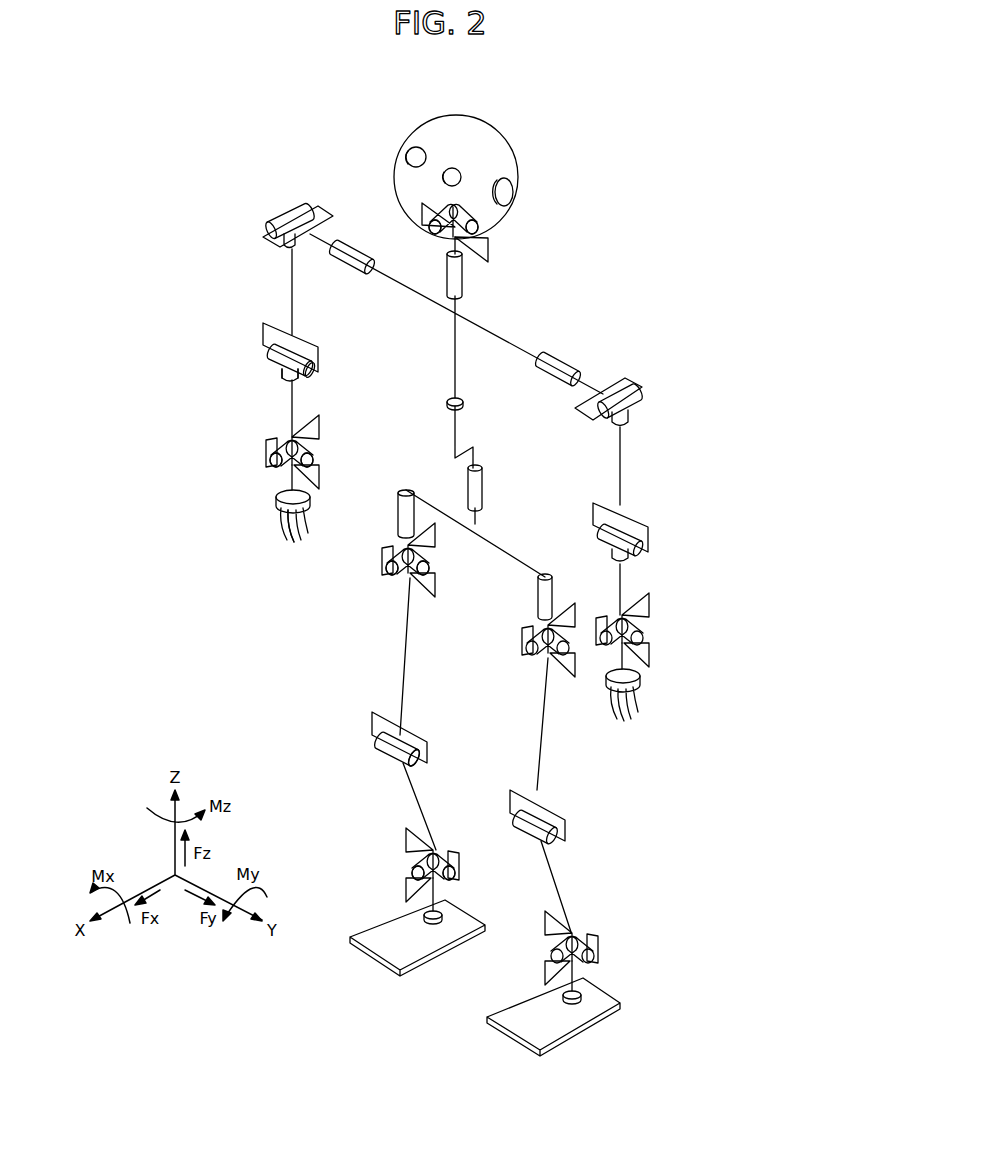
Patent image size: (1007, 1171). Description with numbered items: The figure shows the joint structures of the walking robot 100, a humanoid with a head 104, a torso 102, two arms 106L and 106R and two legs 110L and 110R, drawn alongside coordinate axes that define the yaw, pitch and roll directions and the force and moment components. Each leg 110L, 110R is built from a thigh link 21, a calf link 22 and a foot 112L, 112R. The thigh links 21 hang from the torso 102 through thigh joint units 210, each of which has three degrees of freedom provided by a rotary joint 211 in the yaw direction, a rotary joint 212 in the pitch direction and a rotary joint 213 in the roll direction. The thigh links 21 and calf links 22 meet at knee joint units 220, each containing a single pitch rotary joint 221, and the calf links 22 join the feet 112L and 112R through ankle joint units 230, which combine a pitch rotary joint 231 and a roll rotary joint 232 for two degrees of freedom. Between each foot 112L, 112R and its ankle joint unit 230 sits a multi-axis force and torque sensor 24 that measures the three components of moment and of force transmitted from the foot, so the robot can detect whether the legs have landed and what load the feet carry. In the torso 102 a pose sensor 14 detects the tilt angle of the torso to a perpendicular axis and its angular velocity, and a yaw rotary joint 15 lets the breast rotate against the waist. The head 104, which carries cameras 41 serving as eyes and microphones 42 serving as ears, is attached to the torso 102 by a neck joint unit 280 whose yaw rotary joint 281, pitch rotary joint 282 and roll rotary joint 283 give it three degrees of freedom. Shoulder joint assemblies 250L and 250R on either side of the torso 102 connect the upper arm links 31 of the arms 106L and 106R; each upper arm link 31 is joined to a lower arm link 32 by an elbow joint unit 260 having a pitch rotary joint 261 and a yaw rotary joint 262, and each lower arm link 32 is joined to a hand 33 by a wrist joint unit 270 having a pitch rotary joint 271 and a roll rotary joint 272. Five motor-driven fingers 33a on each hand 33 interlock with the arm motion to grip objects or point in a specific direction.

The walking robot 100 is at (720, 129).
The torso 102 is at (454, 375).
The head 104 is at (512, 134).
The right arm 106R is at (195, 340).
The left arm 106L is at (699, 514).
The right leg 110R is at (313, 689).
The left leg 110L is at (597, 769).
The right foot 112R is at (370, 958).
The left foot 112L is at (512, 1030).
The pose sensor 14 is at (462, 405).
The rotary joint in the yaw direction 15 is at (483, 488).
The thigh link 21 is at (404, 663).
The calf link 22 is at (415, 800).
The multi-axis force and torque sensor 24 is at (440, 924).
The upper arm link 31 is at (291, 273).
The lower arm link 32 is at (291, 391).
The hand 33 is at (278, 511).
The fingers 33a is at (290, 530).
The cameras 41 is at (443, 181).
The microphones 42 is at (513, 192).
The thigh joint unit 210 is at (367, 567).
The rotary joint in the yaw direction 211 is at (399, 510).
The rotary joint in the pitch direction 212 is at (430, 567).
The rotary joint in the roll direction 213 is at (393, 578).
The knee joint unit 220 is at (363, 757).
The rotary joint in the pitch direction 221 is at (410, 740).
The ankle joint unit 230 is at (393, 865).
The rotary joint in the pitch direction 231 is at (447, 880).
The rotary joint in the roll direction 232 is at (440, 856).
The right shoulder joint assembly 250R is at (290, 196).
The left shoulder joint assembly 250L is at (594, 346).
The elbow joint unit 260 is at (253, 321).
The rotary joint in the pitch direction 261 is at (300, 346).
The rotary joint in the yaw direction 262 is at (303, 378).
The wrist joint unit 270 is at (266, 463).
The rotary joint in the pitch direction 271 is at (316, 458).
The rotary joint in the roll direction 272 is at (313, 446).
The neck joint unit 280 is at (507, 258).
The rotary joint in the yaw direction 281 is at (464, 278).
The rotary joint in the pitch direction 282 is at (478, 229).
The rotary joint in the roll direction 283 is at (430, 226).